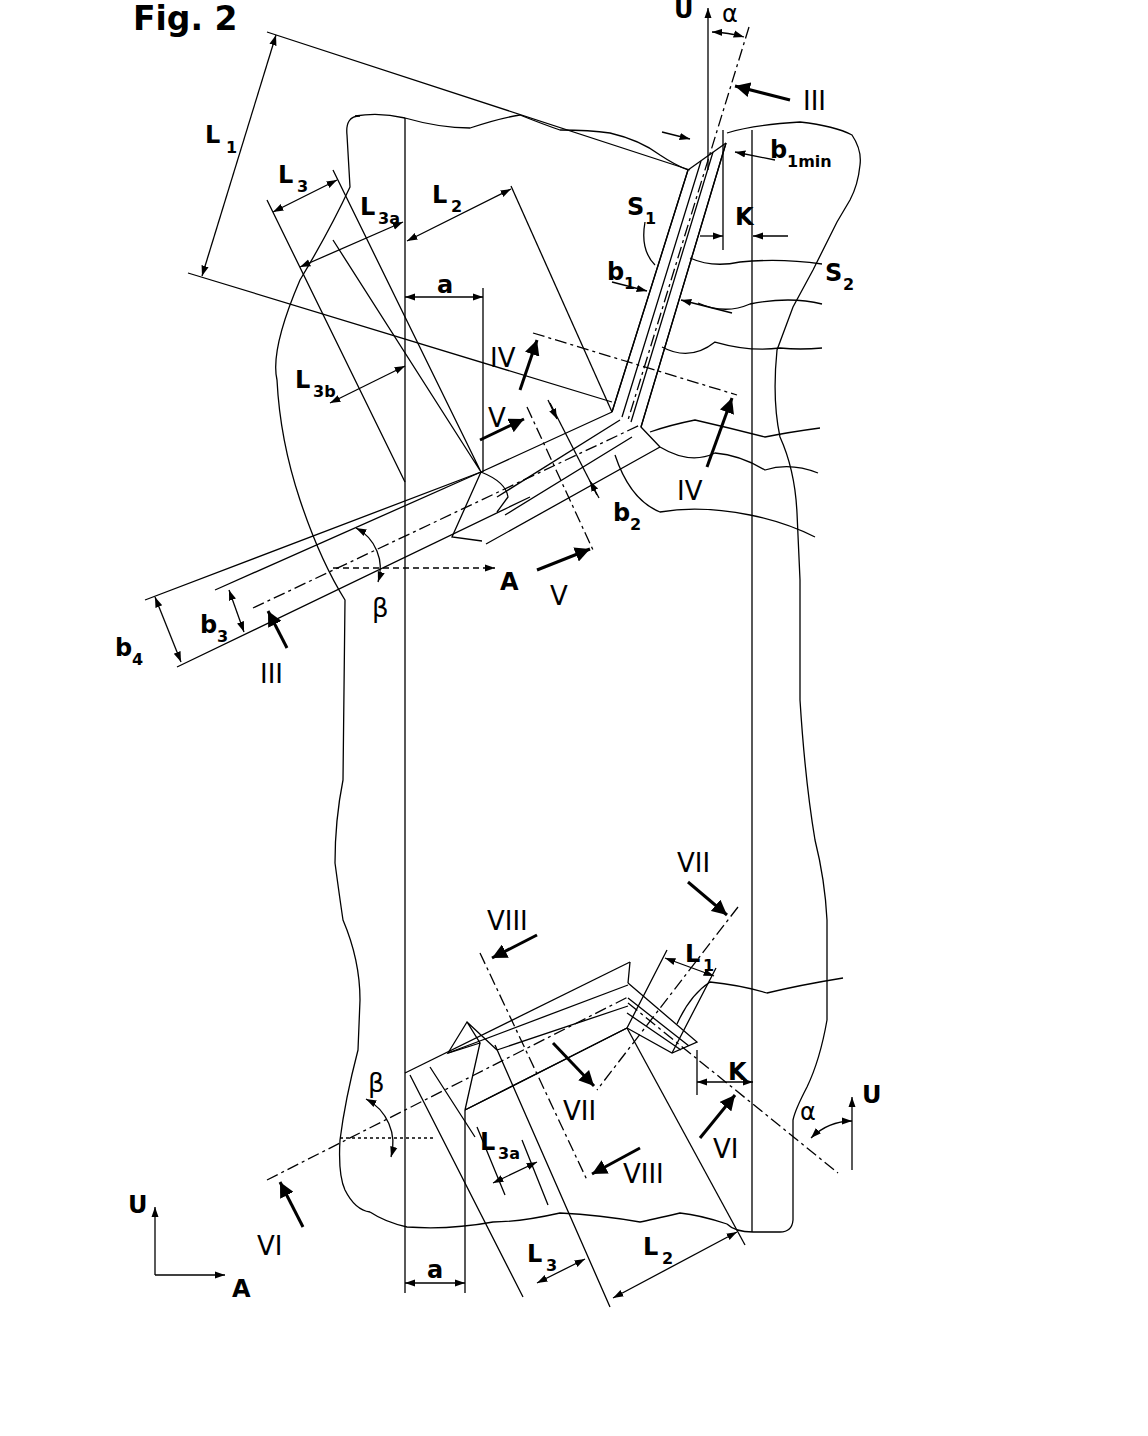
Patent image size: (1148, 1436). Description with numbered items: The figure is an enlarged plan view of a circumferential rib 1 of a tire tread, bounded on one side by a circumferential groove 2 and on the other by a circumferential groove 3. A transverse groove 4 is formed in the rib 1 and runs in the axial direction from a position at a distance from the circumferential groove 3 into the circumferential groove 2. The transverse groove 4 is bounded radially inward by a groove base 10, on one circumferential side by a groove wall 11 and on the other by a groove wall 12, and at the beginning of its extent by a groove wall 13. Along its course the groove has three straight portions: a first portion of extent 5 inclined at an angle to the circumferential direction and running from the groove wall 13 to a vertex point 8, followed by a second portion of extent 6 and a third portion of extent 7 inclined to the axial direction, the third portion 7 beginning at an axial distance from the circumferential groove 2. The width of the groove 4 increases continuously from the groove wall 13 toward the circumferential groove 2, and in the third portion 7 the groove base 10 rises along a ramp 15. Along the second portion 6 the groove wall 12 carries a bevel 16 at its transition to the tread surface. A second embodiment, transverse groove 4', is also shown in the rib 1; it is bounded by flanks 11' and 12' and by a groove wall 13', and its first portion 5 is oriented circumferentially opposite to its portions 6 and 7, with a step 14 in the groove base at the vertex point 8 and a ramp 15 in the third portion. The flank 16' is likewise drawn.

The circumferential rib 1 is at (603, 172).
The circumferential groove 2 is at (373, 930).
The circumferential groove 3 is at (773, 697).
The transverse groove 4 is at (728, 295).
The transverse groove 4' is at (448, 1071).
The first portion of extent 5 is at (770, 659).
The second portion of extent 6 is at (583, 985).
The third portion of extent 7 is at (450, 500).
The vertex point 8 is at (752, 469).
The groove base 10 is at (600, 400).
The groove wall 11 is at (633, 242).
The flank 11' is at (549, 1127).
The groove wall 12 is at (762, 353).
The flank 12' is at (572, 944).
The groove wall 13 is at (687, 114).
The groove wall 13' is at (758, 1078).
The step 14 is at (756, 432).
The ramp 15 is at (480, 507).
The bevel 16 is at (418, 573).
The flank (variant) 16' is at (538, 945).